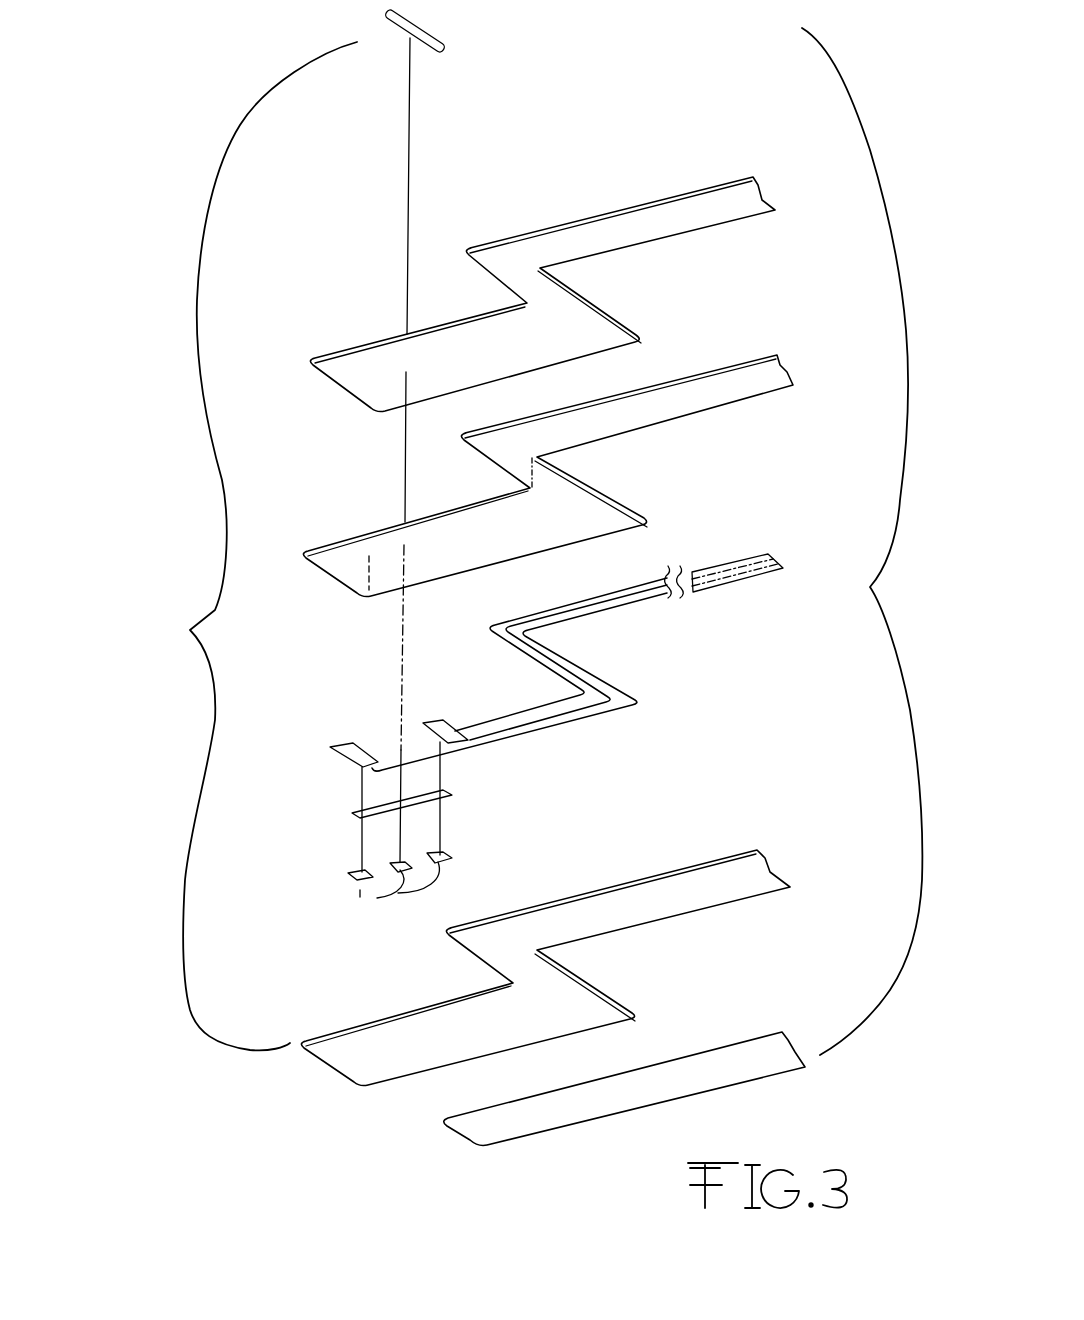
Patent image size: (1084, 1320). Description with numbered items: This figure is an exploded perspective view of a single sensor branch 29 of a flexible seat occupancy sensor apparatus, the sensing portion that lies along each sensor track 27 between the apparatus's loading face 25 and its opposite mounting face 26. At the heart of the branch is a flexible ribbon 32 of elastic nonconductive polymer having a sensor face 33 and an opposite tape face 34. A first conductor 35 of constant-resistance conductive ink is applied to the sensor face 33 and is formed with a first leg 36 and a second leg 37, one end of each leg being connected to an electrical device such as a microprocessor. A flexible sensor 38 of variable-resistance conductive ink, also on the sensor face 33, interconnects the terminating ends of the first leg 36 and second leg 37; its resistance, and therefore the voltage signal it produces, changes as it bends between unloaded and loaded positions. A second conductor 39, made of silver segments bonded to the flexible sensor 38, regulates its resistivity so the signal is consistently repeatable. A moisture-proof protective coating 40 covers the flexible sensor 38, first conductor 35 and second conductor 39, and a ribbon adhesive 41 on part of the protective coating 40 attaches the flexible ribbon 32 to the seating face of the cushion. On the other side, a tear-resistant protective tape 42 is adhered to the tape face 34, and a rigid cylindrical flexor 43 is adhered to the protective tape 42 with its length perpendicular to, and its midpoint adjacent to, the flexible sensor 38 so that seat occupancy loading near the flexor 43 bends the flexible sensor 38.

The loading face 25 is at (350, 347).
The mounting face 26 is at (375, 1072).
The sensor track 27 is at (884, 584).
The sensor branch 29 is at (178, 631).
The flexible ribbon 32 is at (593, 487).
The sensor face 33 is at (365, 580).
The tape face 34 is at (365, 525).
The first conductor 35 is at (683, 587).
The first leg 36 is at (747, 556).
The second leg 37 is at (758, 577).
The flexible sensor 38 is at (430, 800).
The second conductor 39 is at (358, 880).
The protective coating 40 is at (657, 872).
The ribbon adhesive 41 is at (727, 1057).
The protective tape 42 is at (683, 207).
The flexor 43 is at (427, 32).